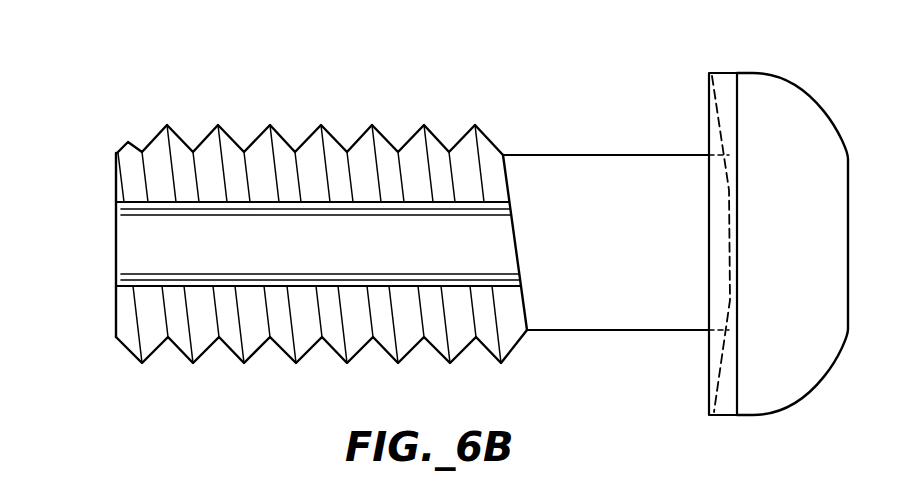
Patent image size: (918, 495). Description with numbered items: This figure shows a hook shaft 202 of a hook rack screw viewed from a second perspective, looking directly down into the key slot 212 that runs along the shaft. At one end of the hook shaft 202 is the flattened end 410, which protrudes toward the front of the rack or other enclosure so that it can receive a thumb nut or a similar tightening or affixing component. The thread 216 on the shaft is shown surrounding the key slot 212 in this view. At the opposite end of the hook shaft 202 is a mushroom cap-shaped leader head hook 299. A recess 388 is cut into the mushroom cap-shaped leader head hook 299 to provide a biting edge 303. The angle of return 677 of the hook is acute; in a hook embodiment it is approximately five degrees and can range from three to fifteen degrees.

The thread 216 is at (291, 127).
The key slot 212 is at (158, 256).
The flattened end 410 is at (115, 315).
The hook shaft 202 is at (628, 252).
The biting edge 303 is at (709, 73).
The recess 388 is at (713, 152).
The angle of return 677 is at (722, 117).
The mushroom cap-shaped leader head hook 299 is at (814, 163).